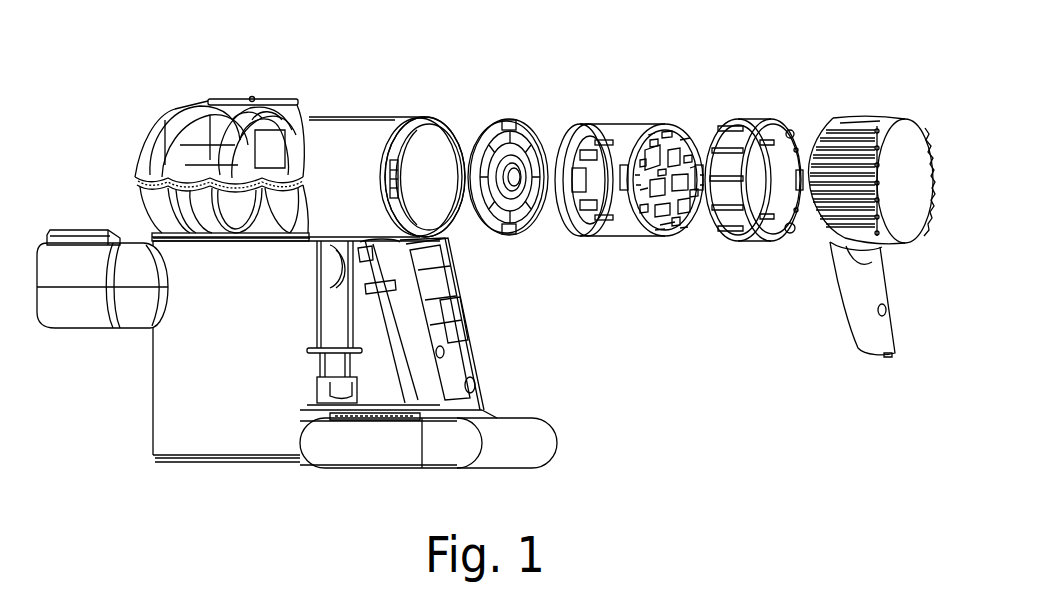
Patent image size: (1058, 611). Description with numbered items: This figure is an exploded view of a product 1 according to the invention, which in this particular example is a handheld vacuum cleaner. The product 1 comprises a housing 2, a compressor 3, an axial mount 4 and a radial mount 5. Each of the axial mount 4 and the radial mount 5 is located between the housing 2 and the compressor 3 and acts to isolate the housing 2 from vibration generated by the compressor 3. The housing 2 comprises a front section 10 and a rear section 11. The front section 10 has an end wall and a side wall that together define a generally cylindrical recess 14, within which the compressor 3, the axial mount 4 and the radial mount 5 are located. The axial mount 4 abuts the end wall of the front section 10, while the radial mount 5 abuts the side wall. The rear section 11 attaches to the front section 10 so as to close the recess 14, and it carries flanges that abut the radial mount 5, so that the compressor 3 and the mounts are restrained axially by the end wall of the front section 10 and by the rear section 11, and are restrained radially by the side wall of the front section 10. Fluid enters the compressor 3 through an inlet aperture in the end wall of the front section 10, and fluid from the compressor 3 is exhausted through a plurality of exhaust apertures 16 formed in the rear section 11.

The product 1 is at (160, 58).
The housing 2 is at (250, 98).
The compressor 3 is at (626, 118).
The axial mount 4 is at (512, 118).
The radial mount 5 is at (757, 118).
The front section 10 is at (378, 112).
The rear section 11 is at (873, 118).
The recess 14 is at (443, 217).
The exhaust apertures 16 is at (855, 215).